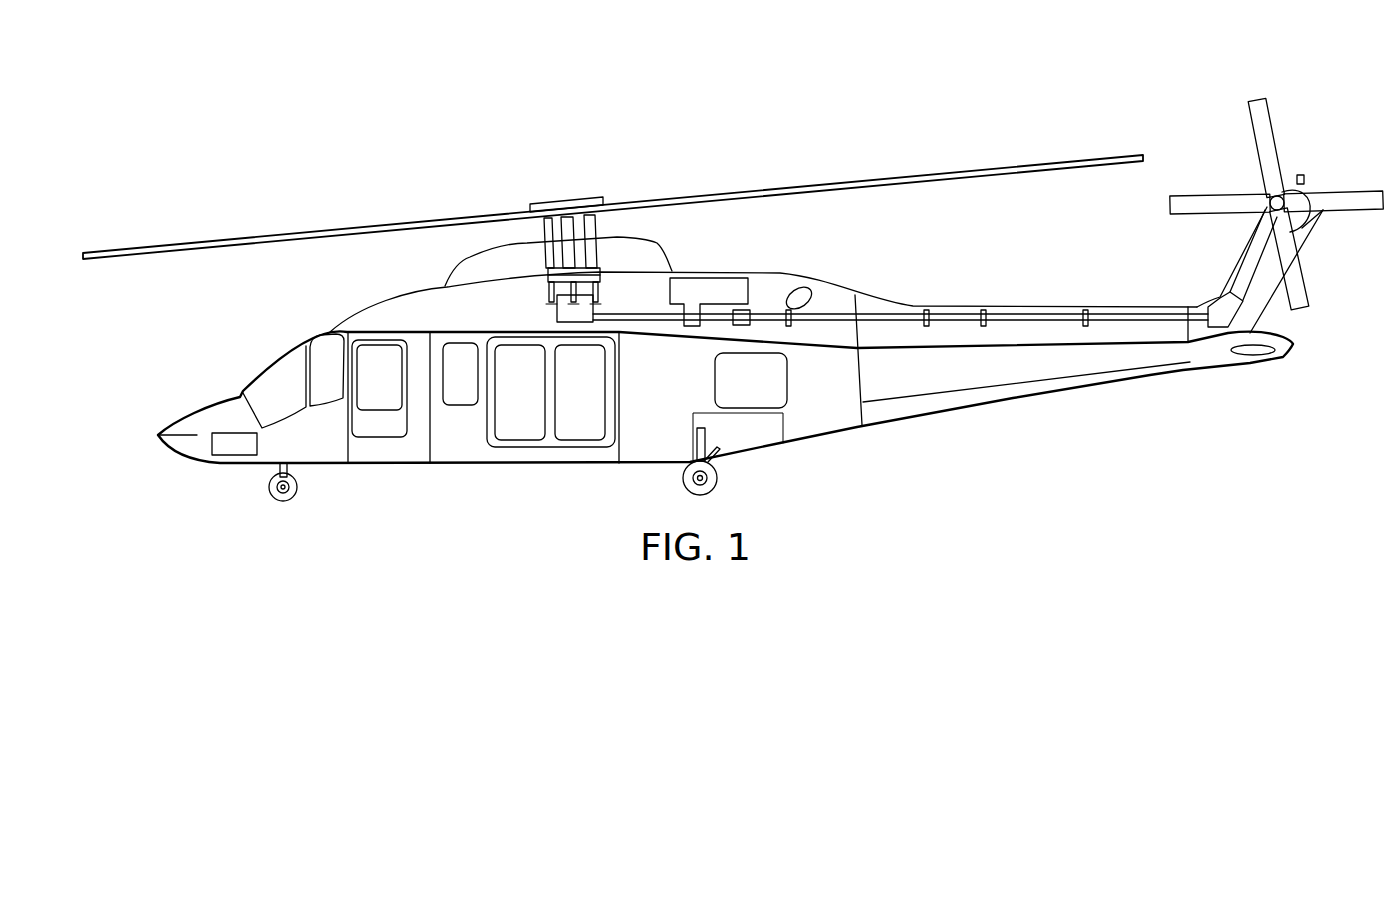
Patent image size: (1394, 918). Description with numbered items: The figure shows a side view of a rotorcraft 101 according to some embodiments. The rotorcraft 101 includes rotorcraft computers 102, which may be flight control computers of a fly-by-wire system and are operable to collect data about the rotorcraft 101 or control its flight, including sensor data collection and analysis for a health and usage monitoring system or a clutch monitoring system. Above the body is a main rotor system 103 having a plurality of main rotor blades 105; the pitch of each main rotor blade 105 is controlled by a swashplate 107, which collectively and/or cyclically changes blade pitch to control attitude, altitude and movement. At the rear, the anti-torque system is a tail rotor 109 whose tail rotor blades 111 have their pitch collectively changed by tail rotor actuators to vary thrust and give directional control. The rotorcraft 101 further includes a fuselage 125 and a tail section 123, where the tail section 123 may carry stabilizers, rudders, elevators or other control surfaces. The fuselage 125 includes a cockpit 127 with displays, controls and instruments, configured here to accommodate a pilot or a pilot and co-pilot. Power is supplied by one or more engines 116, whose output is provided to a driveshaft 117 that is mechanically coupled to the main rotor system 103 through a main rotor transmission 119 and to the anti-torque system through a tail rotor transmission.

The rotorcraft 101 is at (365, 140).
The rotorcraft computers 102 is at (235, 447).
The main rotor system 103 is at (603, 172).
The main rotor blade 105 is at (967, 172).
The swashplate 107 is at (625, 247).
The tail rotor 109 is at (1307, 140).
The tail rotor blade 111 is at (1353, 190).
The engine 116 is at (713, 287).
The driveshaft 117 is at (651, 323).
The main rotor transmission 119 is at (557, 315).
The tail section 123 is at (1110, 390).
The fuselage 125 is at (512, 465).
The cockpit 127 is at (265, 367).